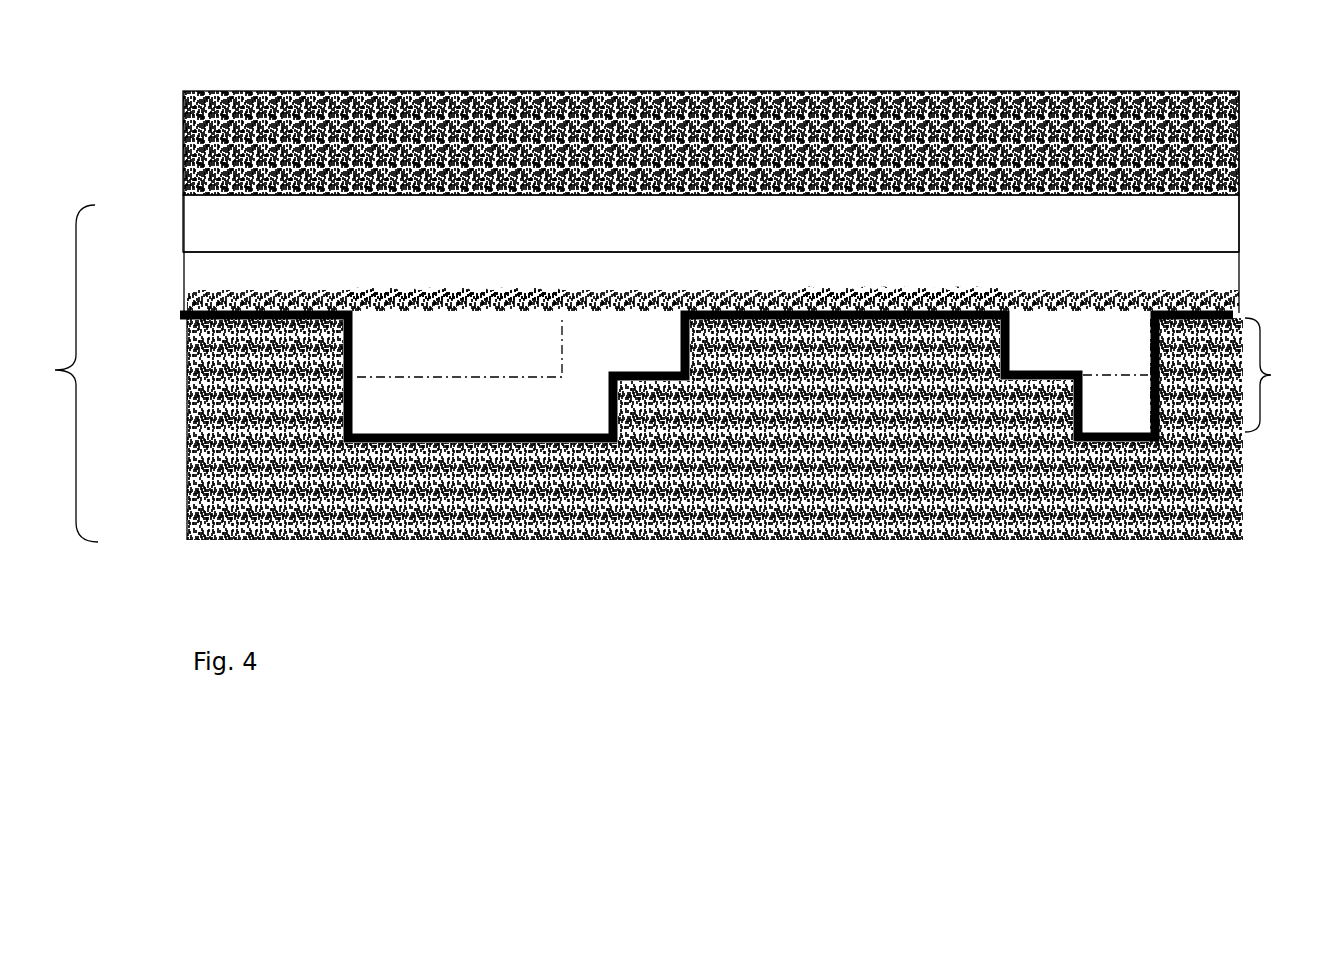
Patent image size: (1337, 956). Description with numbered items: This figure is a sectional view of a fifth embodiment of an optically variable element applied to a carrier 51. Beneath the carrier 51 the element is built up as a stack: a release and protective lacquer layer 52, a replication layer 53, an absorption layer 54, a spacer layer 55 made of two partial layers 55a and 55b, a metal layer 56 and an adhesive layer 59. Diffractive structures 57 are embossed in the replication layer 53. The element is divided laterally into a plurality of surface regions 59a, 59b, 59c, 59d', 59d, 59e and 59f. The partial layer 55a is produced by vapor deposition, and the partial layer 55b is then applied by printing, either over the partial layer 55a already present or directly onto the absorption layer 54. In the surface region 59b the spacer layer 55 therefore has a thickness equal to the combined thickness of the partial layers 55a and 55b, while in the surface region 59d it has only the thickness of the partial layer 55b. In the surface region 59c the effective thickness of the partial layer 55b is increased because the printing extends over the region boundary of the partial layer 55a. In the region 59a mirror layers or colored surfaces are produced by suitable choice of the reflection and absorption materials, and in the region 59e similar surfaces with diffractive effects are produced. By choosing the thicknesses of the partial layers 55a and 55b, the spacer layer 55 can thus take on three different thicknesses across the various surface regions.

The carrier 51 is at (1207, 148).
The release and protective lacquer layer 52 is at (220, 238).
The replication layer 53 is at (1190, 265).
The absorption layer 54 is at (207, 293).
The spacer layer 55 is at (750, 426).
The partial layer 55a is at (405, 347).
The partial layer 55b is at (433, 405).
The metal layer 56 is at (343, 378).
The diffractive structures 57 is at (457, 265).
The adhesive layer 59 is at (1157, 448).
The surface region 59a is at (265, 503).
The surface region 59b is at (468, 477).
The surface region 59c is at (585, 483).
The surface region 59d' is at (656, 491).
The surface region 59d is at (1125, 463).
The surface region 59e is at (895, 470).
The surface region 59f is at (1117, 467).